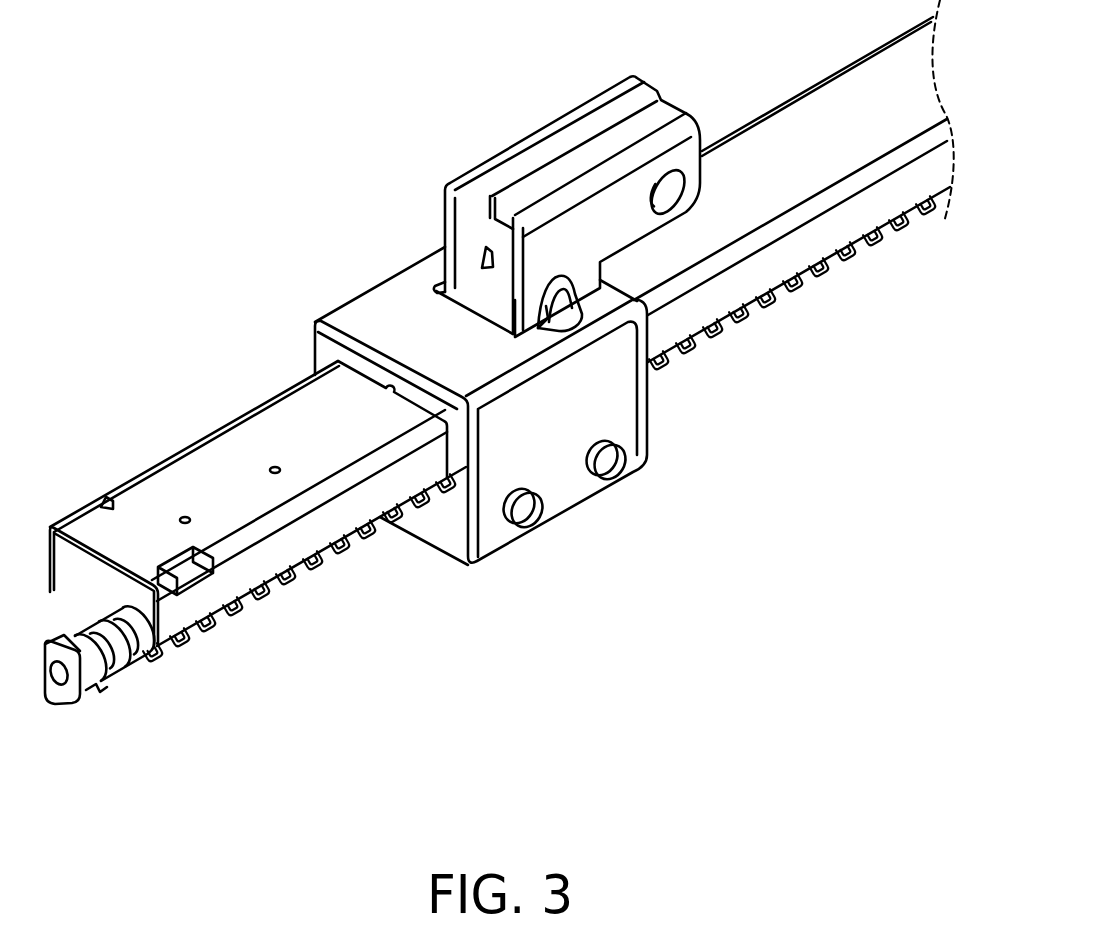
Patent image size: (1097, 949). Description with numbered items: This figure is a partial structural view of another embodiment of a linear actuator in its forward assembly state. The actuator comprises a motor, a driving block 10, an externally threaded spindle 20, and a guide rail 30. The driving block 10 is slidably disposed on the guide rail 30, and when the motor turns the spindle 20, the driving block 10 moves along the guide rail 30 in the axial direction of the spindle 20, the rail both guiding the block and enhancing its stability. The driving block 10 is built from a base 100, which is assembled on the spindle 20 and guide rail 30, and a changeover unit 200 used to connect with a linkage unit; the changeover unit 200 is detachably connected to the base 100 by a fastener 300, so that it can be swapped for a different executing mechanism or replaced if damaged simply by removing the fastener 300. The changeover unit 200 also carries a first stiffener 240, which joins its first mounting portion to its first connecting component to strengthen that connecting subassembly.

The driving block 10 is at (352, 186).
The spindle 20 is at (108, 680).
The guide rail 30 is at (223, 425).
The base 100 is at (428, 527).
The changeover unit 200 is at (560, 120).
The first stiffener 240 is at (582, 305).
The fastener 300 is at (530, 513).